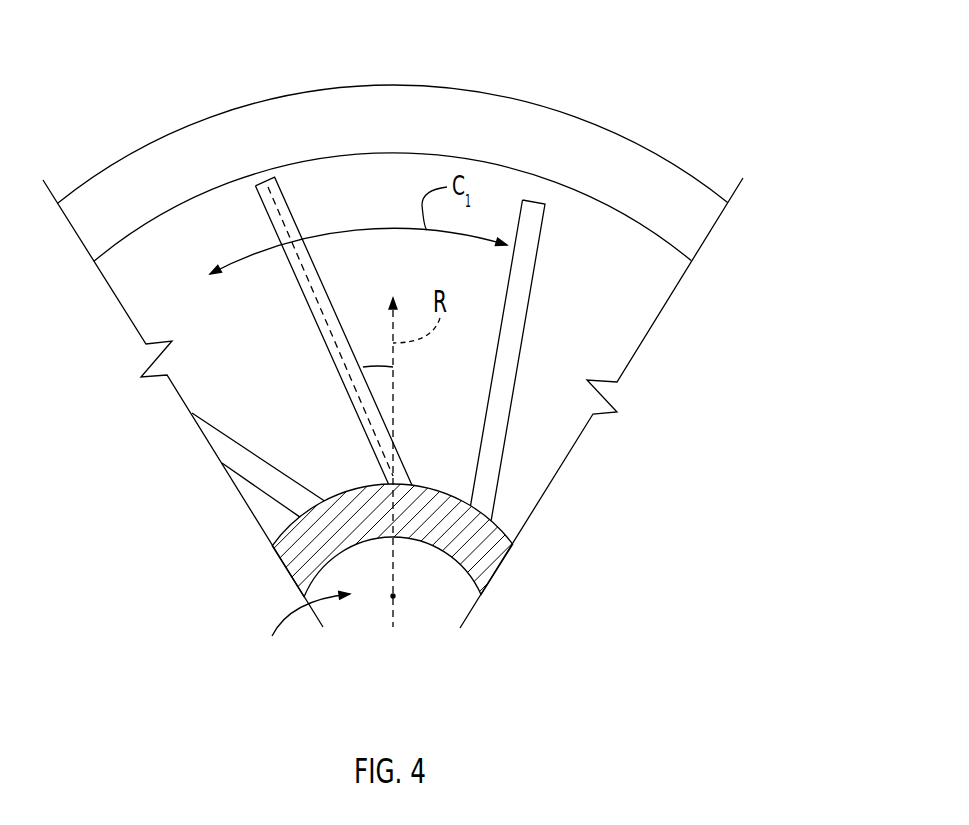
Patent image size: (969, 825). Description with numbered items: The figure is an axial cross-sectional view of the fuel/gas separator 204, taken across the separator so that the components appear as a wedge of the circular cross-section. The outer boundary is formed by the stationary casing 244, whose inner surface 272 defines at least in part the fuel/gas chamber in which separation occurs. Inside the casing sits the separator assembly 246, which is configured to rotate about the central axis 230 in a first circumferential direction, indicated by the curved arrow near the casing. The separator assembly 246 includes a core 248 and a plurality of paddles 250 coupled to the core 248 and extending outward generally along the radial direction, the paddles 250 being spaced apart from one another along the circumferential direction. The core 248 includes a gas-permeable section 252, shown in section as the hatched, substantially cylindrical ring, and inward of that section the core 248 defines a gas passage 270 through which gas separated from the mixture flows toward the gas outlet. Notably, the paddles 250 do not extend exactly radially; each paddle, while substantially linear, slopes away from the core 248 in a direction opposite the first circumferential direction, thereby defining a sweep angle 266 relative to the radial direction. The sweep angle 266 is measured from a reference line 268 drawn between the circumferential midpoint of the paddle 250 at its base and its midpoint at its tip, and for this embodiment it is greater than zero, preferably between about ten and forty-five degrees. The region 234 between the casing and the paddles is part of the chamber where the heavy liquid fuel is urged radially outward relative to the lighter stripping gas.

The fuel/gas separator 204 is at (591, 90).
The stationary casing 244 is at (465, 102).
The separator assembly 246 is at (584, 232).
The paddles 250 is at (290, 197).
The inner surface 272 is at (363, 157).
The flow passage 234 is at (606, 320).
The sweep angle 266 is at (370, 364).
The reference line 268 is at (313, 297).
The gas-permeable section 252 is at (283, 563).
The core 248 is at (498, 525).
The gas passage 270 is at (300, 634).
The central axis 230 is at (400, 597).